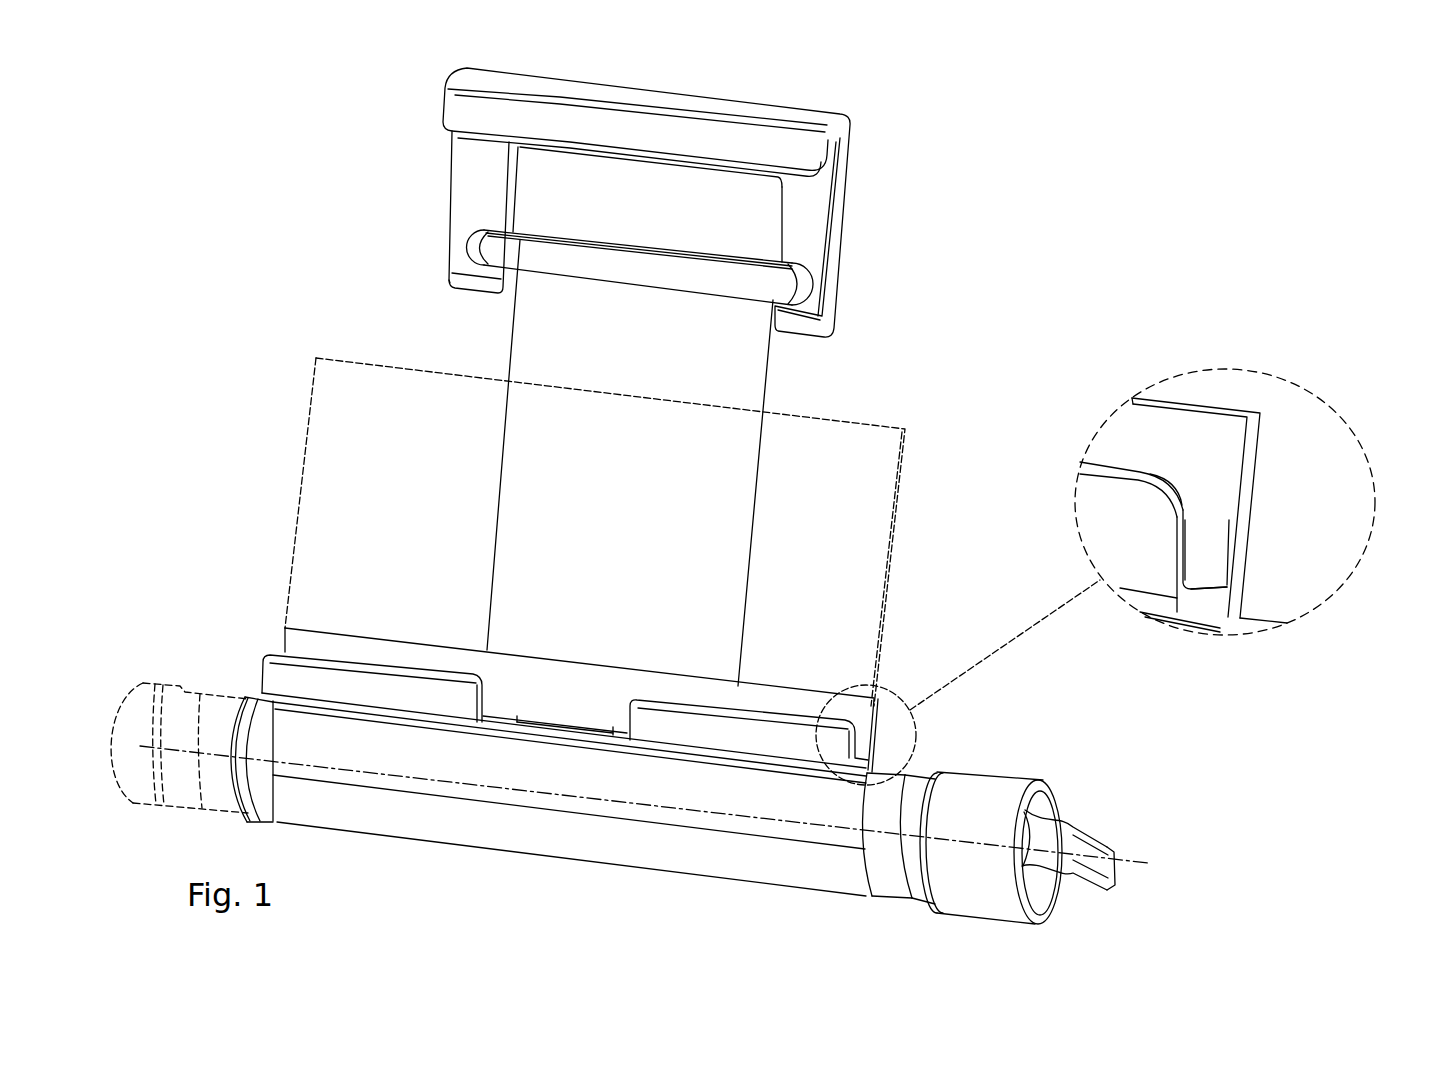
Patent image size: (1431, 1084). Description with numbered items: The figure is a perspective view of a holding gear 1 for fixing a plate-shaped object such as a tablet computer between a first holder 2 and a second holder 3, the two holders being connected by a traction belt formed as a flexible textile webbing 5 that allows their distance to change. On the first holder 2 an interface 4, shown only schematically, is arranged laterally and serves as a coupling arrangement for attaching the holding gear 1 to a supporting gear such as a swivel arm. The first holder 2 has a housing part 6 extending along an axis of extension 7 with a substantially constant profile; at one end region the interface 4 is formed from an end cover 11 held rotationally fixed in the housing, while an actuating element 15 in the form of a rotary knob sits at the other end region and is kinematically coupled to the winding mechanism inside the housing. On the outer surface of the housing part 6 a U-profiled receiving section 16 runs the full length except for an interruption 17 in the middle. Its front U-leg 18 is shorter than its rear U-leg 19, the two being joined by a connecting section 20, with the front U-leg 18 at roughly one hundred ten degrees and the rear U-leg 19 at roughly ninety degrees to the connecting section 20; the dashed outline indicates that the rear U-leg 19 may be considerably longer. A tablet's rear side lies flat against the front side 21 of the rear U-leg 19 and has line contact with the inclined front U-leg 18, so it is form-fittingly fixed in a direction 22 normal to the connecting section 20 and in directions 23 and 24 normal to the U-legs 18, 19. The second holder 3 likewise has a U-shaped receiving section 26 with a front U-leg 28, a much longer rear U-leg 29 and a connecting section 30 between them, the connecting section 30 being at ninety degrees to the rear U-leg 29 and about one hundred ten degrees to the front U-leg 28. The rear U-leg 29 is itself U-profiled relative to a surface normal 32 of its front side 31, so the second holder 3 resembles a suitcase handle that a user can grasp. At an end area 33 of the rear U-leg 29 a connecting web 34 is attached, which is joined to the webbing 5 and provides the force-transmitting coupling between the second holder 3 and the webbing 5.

The holding gear 1 is at (299, 248).
The first holder 2 is at (476, 855).
The second holder 3 is at (423, 152).
The interface 4 is at (170, 673).
The webbing 5 is at (750, 348).
The housing part 6 is at (670, 857).
The axis of extension 7 is at (395, 773).
The end cover 11 is at (250, 712).
The actuating element 15 is at (992, 794).
The receiving section 16 is at (386, 655).
The interruption 17 is at (555, 728).
The front U-leg 18 is at (1097, 518).
The rear U-leg 19 is at (1222, 518).
The connecting section 20 is at (1210, 590).
The front side 21 is at (1209, 449).
The direction 22 is at (1202, 548).
The direction 23 is at (1187, 495).
The direction 24 is at (1159, 425).
The receiving section 26 is at (862, 140).
The front U-leg 28 is at (806, 158).
The rear U-leg 29 is at (475, 200).
The connecting section 30 is at (840, 113).
The front side 31 is at (470, 172).
The surface normal 32 is at (763, 242).
The end area 33 is at (452, 287).
The connecting web 34 is at (570, 264).